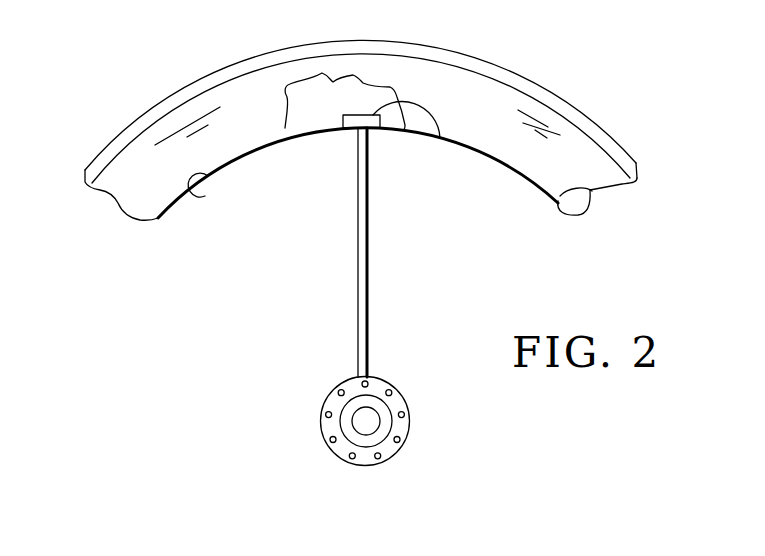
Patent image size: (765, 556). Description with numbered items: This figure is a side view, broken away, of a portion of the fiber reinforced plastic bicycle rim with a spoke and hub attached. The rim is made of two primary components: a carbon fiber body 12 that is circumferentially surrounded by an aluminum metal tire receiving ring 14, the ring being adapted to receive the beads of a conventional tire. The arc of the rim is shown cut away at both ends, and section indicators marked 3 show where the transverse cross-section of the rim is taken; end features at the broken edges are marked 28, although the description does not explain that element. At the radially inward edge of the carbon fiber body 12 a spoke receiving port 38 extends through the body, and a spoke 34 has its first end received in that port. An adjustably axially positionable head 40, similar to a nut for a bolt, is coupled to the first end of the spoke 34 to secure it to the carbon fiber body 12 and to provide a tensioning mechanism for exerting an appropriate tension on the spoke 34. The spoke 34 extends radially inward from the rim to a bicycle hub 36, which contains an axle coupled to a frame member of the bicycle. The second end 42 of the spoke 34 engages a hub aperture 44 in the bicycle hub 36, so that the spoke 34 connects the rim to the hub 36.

The carbon fiber body 12 is at (118, 222).
The tire receiving ring 14 is at (158, 90).
The end pads 28 is at (205, 196).
The section line indicator 3 is at (335, 30).
The spoke 34 is at (385, 266).
The bicycle hub 36 is at (425, 403).
The spoke receiving port 38 is at (380, 141).
The adjustably axially positionable head 40 is at (438, 137).
The second end of the spoke 42 is at (370, 374).
The hub aperture 44 is at (348, 382).